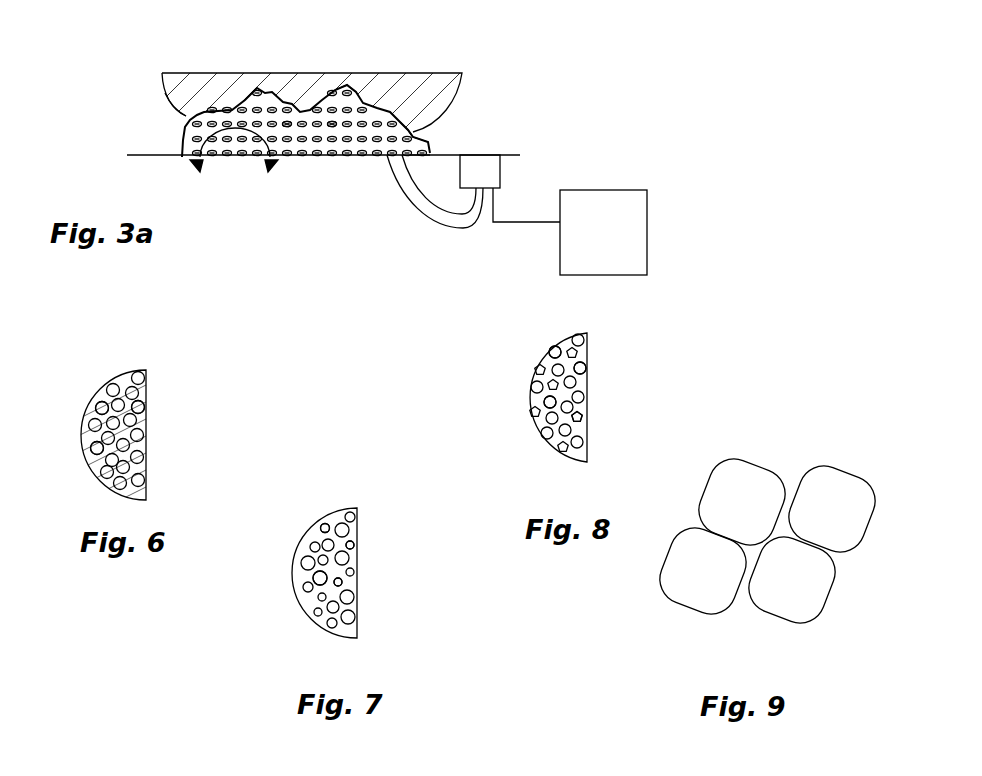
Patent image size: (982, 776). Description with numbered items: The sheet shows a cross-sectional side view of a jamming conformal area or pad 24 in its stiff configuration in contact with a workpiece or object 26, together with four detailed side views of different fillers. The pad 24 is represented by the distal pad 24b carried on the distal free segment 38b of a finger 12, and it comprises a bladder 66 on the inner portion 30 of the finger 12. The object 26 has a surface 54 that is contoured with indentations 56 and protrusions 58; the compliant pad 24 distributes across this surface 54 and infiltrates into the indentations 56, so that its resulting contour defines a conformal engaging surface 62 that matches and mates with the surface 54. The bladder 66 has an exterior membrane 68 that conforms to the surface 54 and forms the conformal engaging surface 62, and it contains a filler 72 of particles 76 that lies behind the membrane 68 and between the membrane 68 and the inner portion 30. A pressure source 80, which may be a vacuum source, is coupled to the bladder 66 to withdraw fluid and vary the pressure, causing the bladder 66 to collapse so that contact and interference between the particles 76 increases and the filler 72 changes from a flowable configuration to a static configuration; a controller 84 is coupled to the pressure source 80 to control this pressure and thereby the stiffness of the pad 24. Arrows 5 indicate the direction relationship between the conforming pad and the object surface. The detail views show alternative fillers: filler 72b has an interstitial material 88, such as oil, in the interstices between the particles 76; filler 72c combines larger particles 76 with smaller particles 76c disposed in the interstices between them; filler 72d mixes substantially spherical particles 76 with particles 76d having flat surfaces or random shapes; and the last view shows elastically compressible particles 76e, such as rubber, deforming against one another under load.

In FIG. 3A, the direction of movement arrows 5 is at (234, 183).
In FIG. 3A, the finger 12 is at (380, 155).
In FIG. 3A, the jamming conformal pad 24 is at (430, 148).
In FIG. 6, the jamming conformal pad 24 is at (142, 378).
In FIG. 7, the jamming conformal pad 24 is at (355, 517).
In FIG. 8, the jamming conformal pad 24 is at (587, 355).
In FIG. 3A, the distal pad 24b is at (423, 140).
In FIG. 3A, the workpiece or object 26 is at (305, 92).
In FIG. 3A, the inner portion 30 is at (152, 153).
In FIG. 3A, the distal free segment 38b is at (360, 155).
In FIG. 3A, the surface 54 is at (210, 112).
In FIG. 3A, the indentations 56 is at (343, 85).
In FIG. 3A, the protrusions 58 is at (410, 137).
In FIG. 3A, the conformal engaging surface 62 is at (183, 153).
In FIG. 3A, the bladder 66 is at (330, 127).
In FIG. 6, the bladder 66 is at (147, 398).
In FIG. 7, the bladder 66 is at (358, 537).
In FIG. 8, the bladder 66 is at (588, 372).
In FIG. 3A, the exterior membrane 68 is at (287, 130).
In FIG. 3A, the filler 72 is at (410, 155).
In FIG. 6, the filler 72b is at (95, 403).
In FIG. 7, the filler 72c is at (320, 528).
In FIG. 8, the filler 72d is at (545, 358).
In FIG. 6, the particles 76 is at (93, 455).
In FIG. 7, the particles 76 is at (323, 573).
In FIG. 8, the particles 76 is at (550, 402).
In FIG. 7, the smaller particles 76c is at (355, 568).
In FIG. 8, the particles having flat surfaces 76d is at (585, 408).
In FIG. 9, the compressible particles 76e is at (808, 590).
In FIG. 3A, the pressure source 80 is at (497, 177).
In FIG. 3A, the controller 84 is at (603, 190).
In FIG. 6, the interstitial material 88 is at (143, 440).